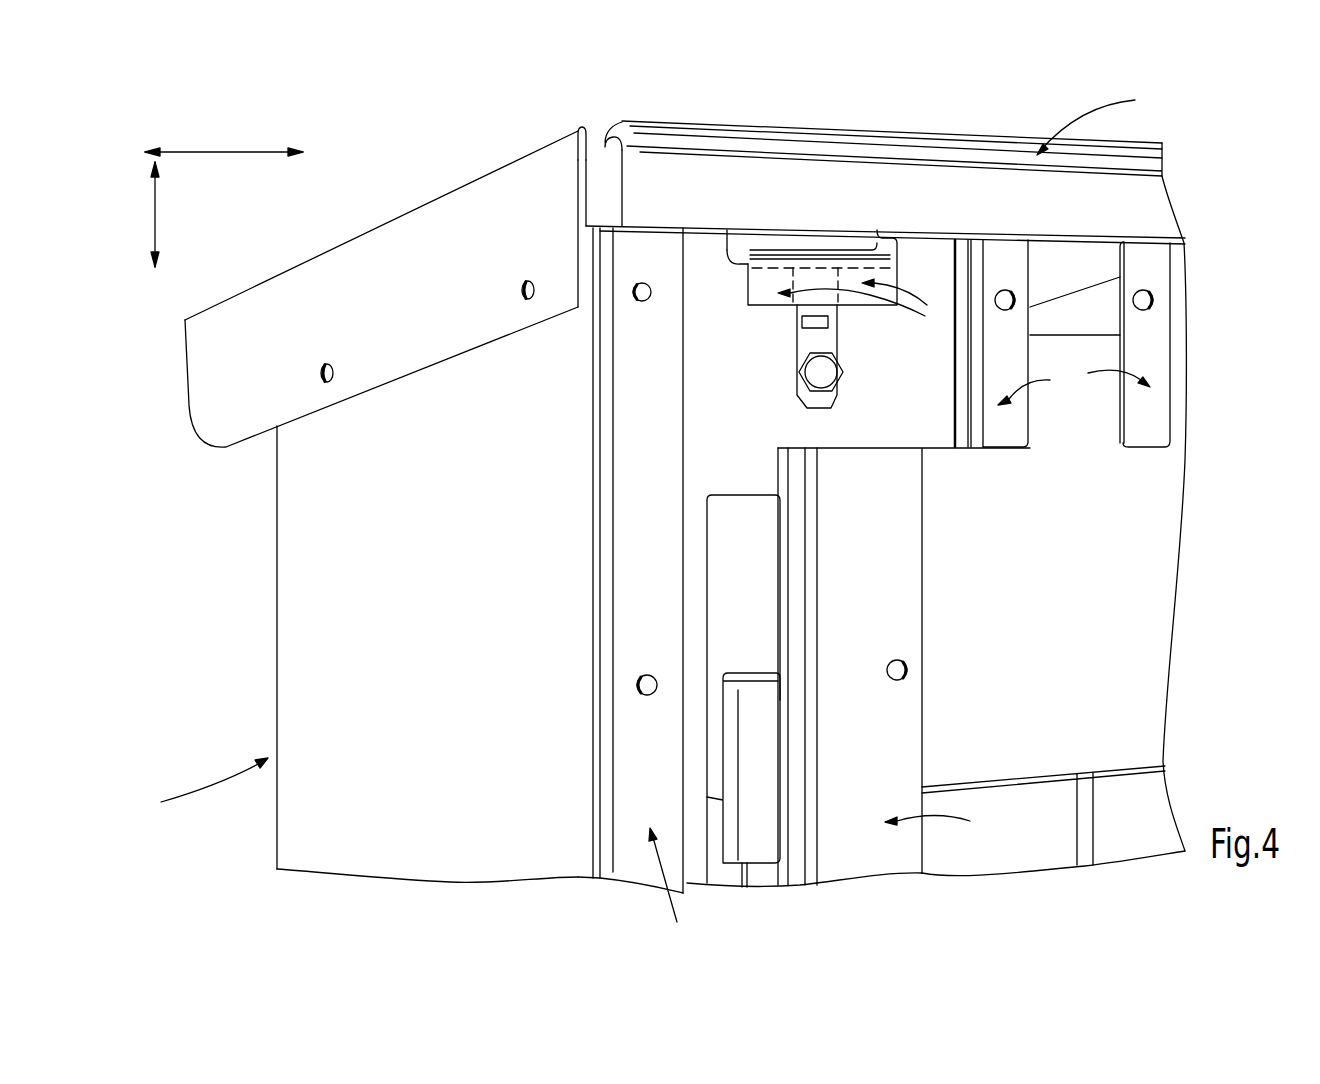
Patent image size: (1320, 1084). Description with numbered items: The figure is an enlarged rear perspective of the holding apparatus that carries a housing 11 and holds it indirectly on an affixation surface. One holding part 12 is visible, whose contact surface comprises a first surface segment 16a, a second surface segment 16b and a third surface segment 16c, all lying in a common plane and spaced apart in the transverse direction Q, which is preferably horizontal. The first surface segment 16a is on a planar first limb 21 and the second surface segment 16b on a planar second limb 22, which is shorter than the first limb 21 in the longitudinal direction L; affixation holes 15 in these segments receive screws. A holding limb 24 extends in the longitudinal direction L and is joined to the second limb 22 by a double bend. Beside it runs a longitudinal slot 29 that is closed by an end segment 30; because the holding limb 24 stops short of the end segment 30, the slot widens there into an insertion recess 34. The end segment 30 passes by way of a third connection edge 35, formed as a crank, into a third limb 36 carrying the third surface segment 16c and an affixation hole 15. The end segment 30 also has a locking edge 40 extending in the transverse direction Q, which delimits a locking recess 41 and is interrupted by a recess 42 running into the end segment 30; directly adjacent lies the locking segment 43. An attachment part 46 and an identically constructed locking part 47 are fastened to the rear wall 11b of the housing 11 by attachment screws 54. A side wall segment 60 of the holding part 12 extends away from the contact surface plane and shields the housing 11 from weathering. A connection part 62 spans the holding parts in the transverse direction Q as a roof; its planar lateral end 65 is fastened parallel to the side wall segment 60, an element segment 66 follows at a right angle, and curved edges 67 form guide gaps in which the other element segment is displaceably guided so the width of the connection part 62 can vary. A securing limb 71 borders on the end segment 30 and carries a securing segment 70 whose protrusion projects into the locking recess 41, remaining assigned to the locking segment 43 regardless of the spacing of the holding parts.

The housing 11 is at (1018, 787).
The rear wall 11b is at (1139, 638).
The holding part 12 is at (202, 786).
The affixation hole 15 is at (1140, 287).
The first surface segment 16a is at (658, 883).
The second surface segment 16b is at (904, 660).
The third surface segment 16c is at (1074, 341).
The first limb 21 is at (640, 860).
The second limb 22 is at (860, 863).
The holding limb 24 is at (770, 878).
The longitudinal slot 29 is at (728, 872).
The end segment 30 is at (747, 405).
The insertion recess 34 is at (778, 573).
The third connection edge 35 is at (968, 430).
The third limb 36 is at (1007, 437).
The locking edge 40 is at (770, 273).
The locking recess 41 is at (723, 267).
The recess 42 is at (842, 338).
The locking segment 43 is at (864, 302).
The attachment part 46 is at (753, 670).
The locking part 47 is at (817, 273).
The attachment screw 54 is at (823, 375).
The side wall segment 60 is at (291, 556).
The connection part 62 is at (894, 130).
The lateral end 65 is at (183, 365).
The element segment 66 is at (600, 118).
The curved edge 67 is at (672, 135).
The securing segment 70 is at (768, 242).
The securing limb 71 is at (603, 177).
The transverse direction Q is at (208, 150).
The longitudinal direction L is at (158, 205).